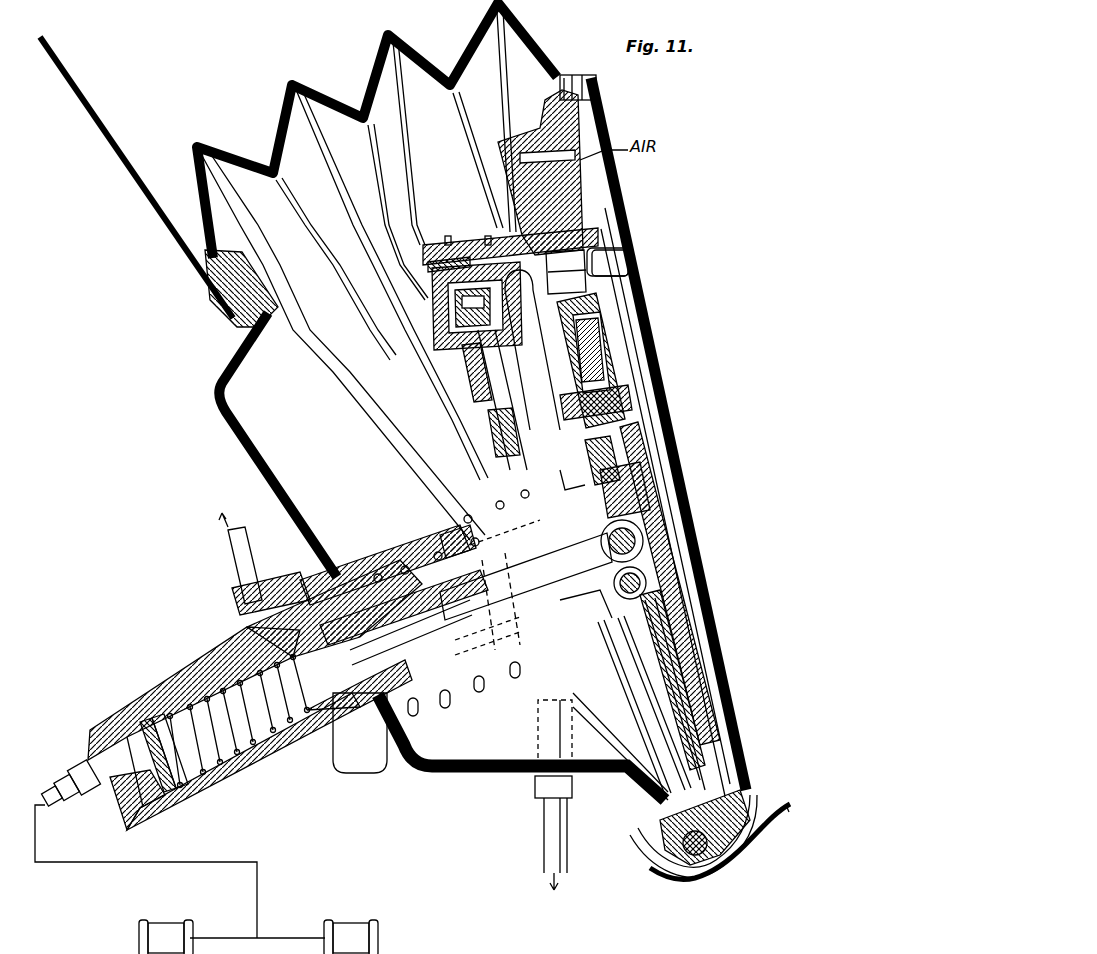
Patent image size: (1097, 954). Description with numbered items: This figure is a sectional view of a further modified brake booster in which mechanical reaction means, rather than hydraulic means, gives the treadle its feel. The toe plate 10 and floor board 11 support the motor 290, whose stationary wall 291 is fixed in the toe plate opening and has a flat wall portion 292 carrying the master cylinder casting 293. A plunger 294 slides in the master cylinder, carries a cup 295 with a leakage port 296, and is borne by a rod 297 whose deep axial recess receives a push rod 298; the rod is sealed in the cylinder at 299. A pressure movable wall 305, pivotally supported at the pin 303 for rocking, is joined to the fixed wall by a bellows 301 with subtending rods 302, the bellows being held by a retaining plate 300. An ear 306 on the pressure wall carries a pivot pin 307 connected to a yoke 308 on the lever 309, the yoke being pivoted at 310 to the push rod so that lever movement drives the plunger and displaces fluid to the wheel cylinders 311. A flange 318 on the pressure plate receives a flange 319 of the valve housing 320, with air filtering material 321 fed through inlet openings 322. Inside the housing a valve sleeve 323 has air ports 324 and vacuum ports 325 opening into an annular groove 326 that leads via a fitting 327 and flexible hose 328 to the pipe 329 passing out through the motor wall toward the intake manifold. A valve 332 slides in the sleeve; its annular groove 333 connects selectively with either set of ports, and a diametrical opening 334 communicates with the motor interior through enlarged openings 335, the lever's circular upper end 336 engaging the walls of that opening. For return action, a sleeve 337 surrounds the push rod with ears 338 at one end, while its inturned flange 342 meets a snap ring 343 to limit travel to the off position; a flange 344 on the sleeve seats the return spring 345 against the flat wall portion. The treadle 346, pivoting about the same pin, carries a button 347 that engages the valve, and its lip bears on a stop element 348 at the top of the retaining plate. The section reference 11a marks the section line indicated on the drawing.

The toe plate 10 is at (128, 173).
The floor board 11 is at (720, 842).
The section line 11a is at (585, 461).
The motor 290 is at (308, 81).
The stationary wall 291 is at (248, 455).
The flat wall portion 292 is at (335, 575).
The master cylinder casting 293 is at (208, 680).
The plunger 294 is at (360, 733).
The cup 295 is at (312, 748).
The leakage port 296 is at (367, 617).
The rod 297 is at (445, 706).
The push rod 298 is at (553, 568).
The seal 299 is at (515, 675).
The bellows retaining plate 300 is at (650, 420).
The bellows 301 is at (395, 48).
The subtending rods 302 is at (214, 178).
The pivot pin 303 is at (696, 848).
The pressure movable wall 305 is at (655, 447).
The ear 306 is at (685, 560).
The pivot pin 307 is at (695, 582).
The yoke 308 is at (650, 492).
The lever 309 is at (599, 470).
The pivotal connection 310 is at (645, 535).
The wheel cylinders 311 is at (152, 924).
The flange 318 is at (610, 393).
The flange 319 is at (508, 142).
The valve housing 320 is at (423, 252).
The air filtering material 321 is at (615, 330).
The inlet openings 322 is at (630, 368).
The valve sleeve 323 is at (428, 266).
The air ports 324 is at (620, 223).
The vacuum ports 325 is at (480, 229).
The annular groove 326 is at (438, 235).
The fitting 327 is at (460, 398).
The flexible hose 328 is at (492, 480).
The pipe 329 is at (546, 829).
The valve 332 is at (432, 298).
The annular groove 333 is at (570, 270).
The diametrical opening 334 is at (472, 302).
The enlarged openings 335 is at (574, 276).
The circular upper end 336 is at (475, 300).
The sleeve 337 is at (618, 622).
The ears 338 is at (614, 583).
The inturned flange 342 is at (440, 538).
The snap ring 343 is at (505, 539).
The flange 344 is at (583, 478).
The return spring 345 is at (495, 505).
The treadle 346 is at (645, 273).
The button 347 is at (568, 78).
The stop element 348 is at (588, 82).